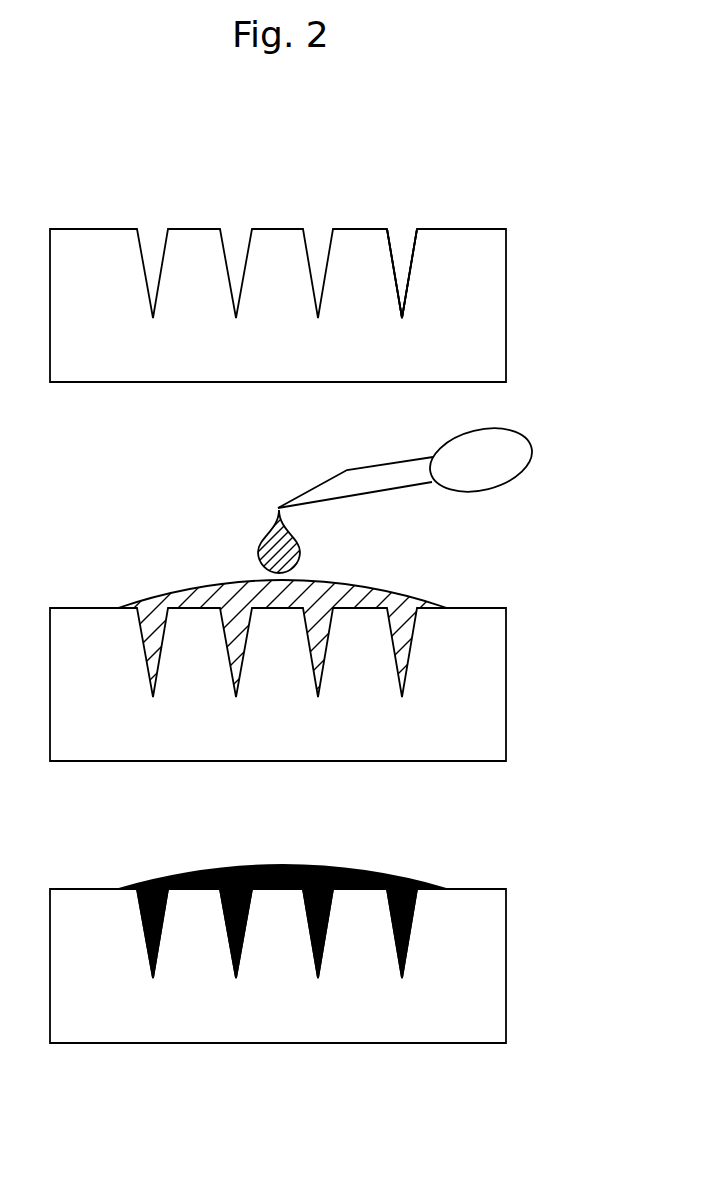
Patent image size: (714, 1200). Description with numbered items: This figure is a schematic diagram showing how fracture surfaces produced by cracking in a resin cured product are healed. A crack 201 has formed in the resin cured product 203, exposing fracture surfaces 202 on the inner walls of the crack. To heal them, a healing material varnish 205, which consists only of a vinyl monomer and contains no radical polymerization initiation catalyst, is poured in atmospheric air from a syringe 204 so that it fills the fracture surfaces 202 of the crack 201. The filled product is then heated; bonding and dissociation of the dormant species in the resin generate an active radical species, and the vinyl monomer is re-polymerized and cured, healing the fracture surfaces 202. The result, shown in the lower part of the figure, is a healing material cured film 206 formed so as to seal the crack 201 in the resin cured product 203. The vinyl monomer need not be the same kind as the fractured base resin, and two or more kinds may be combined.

The crack 201 is at (398, 229).
The fracture surfaces 202 is at (413, 250).
The resin cured product 203 is at (506, 311).
The syringe 204 is at (522, 465).
The healing material varnish 205 is at (383, 597).
The healing material cured film 206 is at (398, 873).